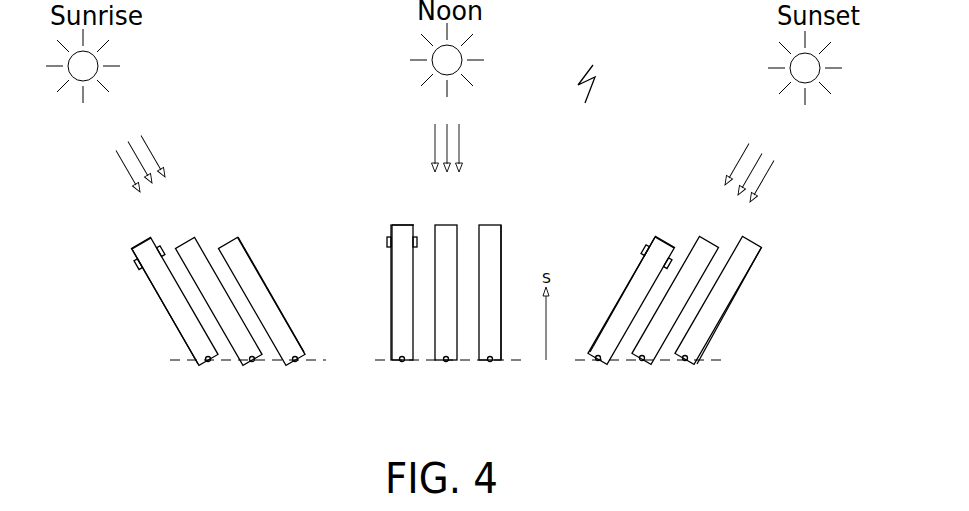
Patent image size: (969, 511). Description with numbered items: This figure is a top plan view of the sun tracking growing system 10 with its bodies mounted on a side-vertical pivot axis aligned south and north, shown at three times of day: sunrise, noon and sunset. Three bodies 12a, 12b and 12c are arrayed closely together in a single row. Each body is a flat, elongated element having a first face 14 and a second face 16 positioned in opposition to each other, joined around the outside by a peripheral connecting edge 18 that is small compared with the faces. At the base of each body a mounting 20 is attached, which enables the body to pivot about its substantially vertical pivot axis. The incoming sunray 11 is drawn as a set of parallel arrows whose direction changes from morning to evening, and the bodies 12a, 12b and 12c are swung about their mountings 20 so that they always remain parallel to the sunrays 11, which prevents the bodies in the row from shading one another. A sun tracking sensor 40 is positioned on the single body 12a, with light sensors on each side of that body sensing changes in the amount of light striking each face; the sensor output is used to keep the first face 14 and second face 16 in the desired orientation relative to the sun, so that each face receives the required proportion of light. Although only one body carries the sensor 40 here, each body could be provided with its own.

The sun tracking growing system 10 is at (595, 68).
The sunray 11 is at (157, 152).
The body 12a is at (140, 243).
The body 12b is at (207, 236).
The body 12c is at (250, 265).
The first face 14 is at (168, 305).
The second face 16 is at (285, 313).
The peripheral connecting edge 18 is at (146, 236).
The mounting 20 is at (295, 362).
The sun tracking sensor 40 is at (137, 265).